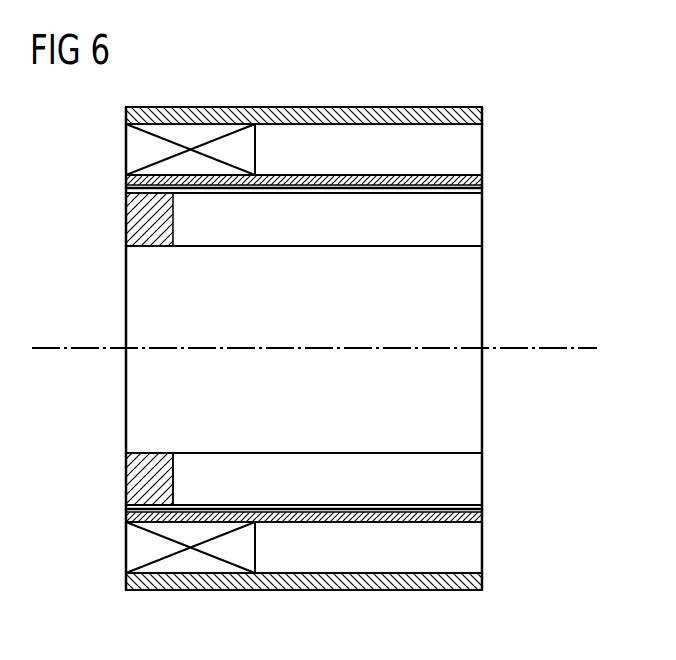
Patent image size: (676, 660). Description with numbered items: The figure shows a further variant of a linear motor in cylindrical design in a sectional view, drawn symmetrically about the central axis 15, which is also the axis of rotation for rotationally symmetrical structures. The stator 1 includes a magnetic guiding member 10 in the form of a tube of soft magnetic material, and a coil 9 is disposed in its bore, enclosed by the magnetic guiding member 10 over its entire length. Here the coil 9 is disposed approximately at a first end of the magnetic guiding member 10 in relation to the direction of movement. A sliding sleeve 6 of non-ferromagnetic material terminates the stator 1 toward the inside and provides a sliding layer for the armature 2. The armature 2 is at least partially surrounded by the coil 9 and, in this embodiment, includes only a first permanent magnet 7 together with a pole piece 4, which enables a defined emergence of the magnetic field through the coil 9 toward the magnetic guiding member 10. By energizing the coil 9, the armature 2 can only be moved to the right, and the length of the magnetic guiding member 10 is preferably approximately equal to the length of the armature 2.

The stator 1 is at (452, 150).
The armature 2 is at (449, 298).
The pole piece 4 is at (133, 222).
The sliding sleeve 6 is at (131, 519).
The first permanent magnet 7 is at (340, 236).
The coil 9 is at (200, 566).
The magnetic guiding member 10 is at (157, 592).
The central axis 15 is at (41, 350).